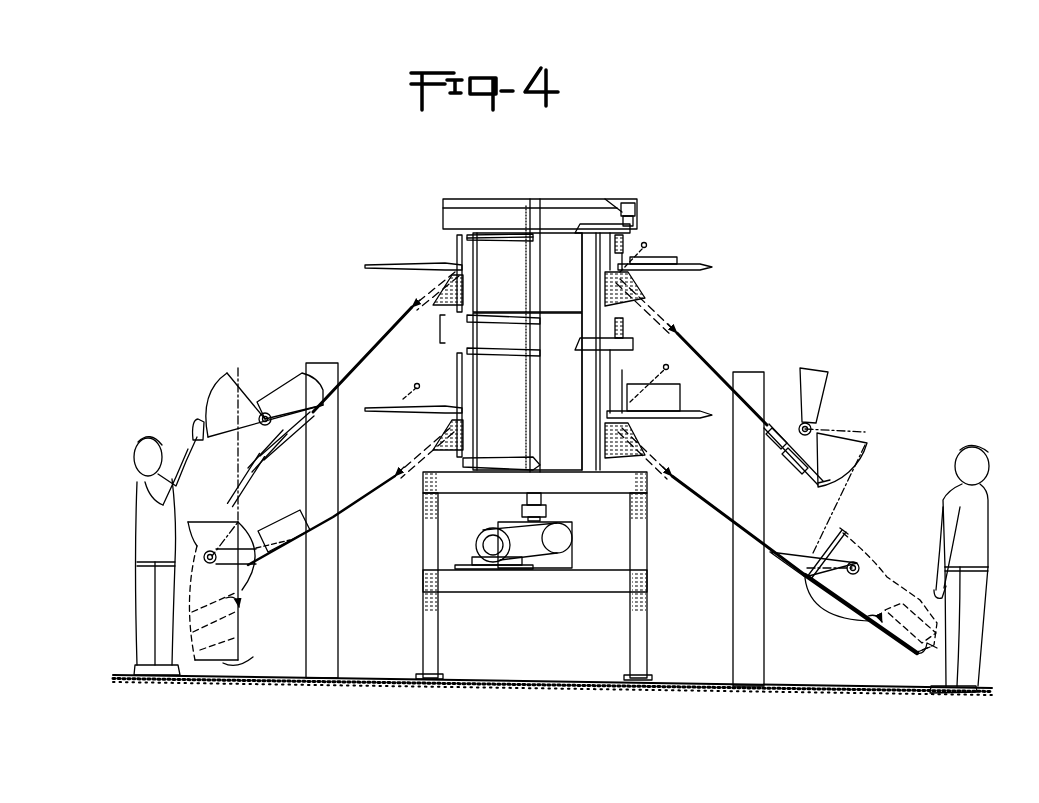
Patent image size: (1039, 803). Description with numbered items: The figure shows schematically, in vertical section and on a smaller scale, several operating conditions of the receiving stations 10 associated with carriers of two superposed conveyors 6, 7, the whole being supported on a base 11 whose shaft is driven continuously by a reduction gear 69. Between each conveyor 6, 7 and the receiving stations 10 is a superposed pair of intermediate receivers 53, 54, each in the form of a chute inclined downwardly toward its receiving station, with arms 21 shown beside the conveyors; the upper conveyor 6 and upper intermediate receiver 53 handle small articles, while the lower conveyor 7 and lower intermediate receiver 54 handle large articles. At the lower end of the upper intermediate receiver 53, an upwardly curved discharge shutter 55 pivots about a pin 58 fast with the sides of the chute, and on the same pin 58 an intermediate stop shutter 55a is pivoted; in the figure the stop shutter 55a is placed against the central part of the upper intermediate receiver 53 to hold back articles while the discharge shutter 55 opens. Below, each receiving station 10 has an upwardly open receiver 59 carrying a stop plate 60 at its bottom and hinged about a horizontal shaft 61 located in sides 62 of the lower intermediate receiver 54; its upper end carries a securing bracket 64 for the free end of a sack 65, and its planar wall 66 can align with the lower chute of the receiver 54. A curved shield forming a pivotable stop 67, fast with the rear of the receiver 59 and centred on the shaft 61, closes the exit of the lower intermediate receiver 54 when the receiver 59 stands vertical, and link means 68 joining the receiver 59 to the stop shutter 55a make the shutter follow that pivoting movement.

The conveyor 6 is at (427, 243).
The conveyor 7 is at (440, 400).
The receiving station 10 is at (895, 577).
The base 11 is at (637, 633).
The support arm 21 is at (689, 262).
The upper intermediate receiver 53 is at (377, 347).
The lower intermediate receiver 54 is at (377, 492).
The discharge shutter 55 is at (208, 393).
The intermediate stop shutter 55a is at (292, 390).
The pin 58 is at (810, 428).
The receiver 59 is at (238, 600).
The stop plate 60 is at (930, 647).
The horizontal shaft 61 is at (858, 564).
The side 62 is at (793, 558).
The securing bracket 64 is at (837, 533).
The sack 65 is at (917, 603).
The planar wall 66 is at (240, 630).
The pivotable stop 67 is at (257, 568).
The link means 68 is at (837, 495).
The reduction gear 69 is at (540, 550).